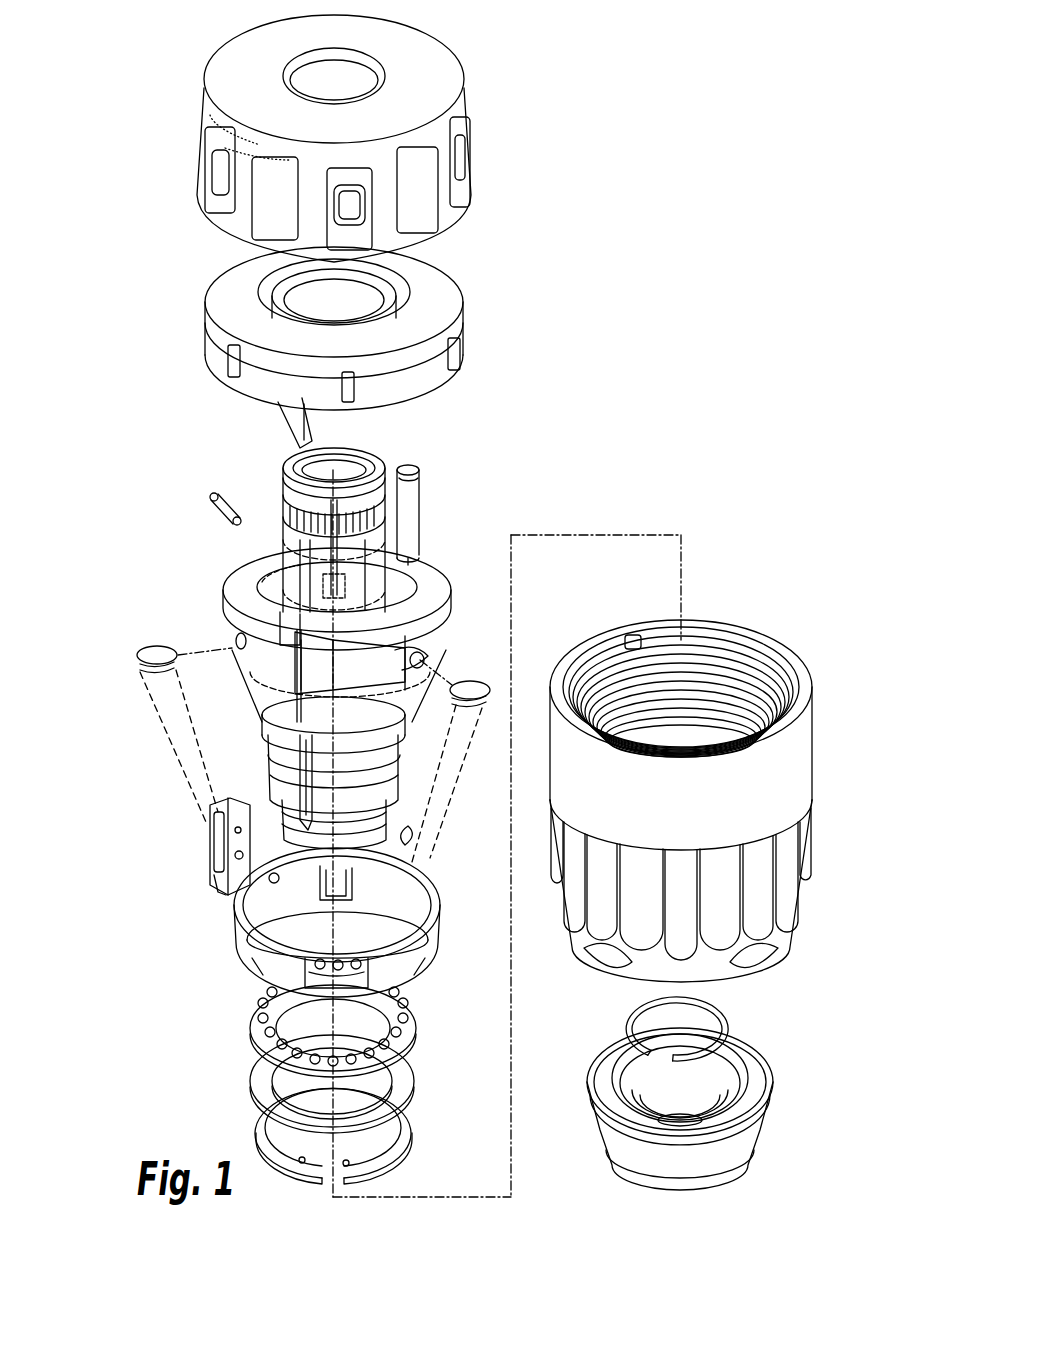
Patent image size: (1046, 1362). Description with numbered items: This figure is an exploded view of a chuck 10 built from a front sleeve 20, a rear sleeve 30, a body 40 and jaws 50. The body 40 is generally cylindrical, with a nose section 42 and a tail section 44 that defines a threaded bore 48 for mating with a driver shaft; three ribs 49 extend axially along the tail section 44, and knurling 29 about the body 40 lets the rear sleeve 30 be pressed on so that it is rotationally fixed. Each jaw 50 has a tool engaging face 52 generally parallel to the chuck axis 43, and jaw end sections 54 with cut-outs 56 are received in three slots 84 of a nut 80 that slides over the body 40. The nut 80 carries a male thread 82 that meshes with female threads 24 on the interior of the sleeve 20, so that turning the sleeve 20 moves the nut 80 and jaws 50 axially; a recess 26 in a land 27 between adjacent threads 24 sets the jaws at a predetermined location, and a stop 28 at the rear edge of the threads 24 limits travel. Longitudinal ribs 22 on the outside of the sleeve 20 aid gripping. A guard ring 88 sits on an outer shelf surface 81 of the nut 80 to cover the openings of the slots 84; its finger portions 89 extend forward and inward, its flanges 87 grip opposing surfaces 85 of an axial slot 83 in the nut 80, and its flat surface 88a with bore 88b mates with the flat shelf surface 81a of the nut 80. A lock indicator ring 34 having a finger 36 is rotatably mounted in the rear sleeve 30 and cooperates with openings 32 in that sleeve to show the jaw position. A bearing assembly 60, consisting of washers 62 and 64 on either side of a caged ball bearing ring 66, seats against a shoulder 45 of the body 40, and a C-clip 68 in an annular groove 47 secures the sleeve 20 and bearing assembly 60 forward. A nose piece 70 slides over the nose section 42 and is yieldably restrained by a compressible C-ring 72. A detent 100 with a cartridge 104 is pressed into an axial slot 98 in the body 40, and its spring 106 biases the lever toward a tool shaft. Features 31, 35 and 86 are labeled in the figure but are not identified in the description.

The chuck 10 is at (190, 462).
The front sleeve 20 is at (740, 810).
The longitudinal ribs 22 is at (656, 894).
The female threads 24 is at (740, 648).
The recess 26 is at (604, 700).
The land 27 is at (706, 675).
The stop 28 is at (633, 635).
The knurling 29 is at (290, 505).
The rear sleeve 30 is at (440, 83).
The opening 31 is at (262, 590).
The openings 32 is at (222, 170).
The lock indicator ring 34 is at (250, 288).
The ring tabs 35 is at (228, 358).
The finger 36 is at (280, 415).
The body 40 is at (375, 565).
The nose section 42 is at (405, 855).
The chuck axis 43 is at (335, 1196).
The tail section 44 is at (300, 478).
The shoulder 45 is at (295, 745).
The annular groove 47 is at (393, 790).
The threaded bore 48 is at (338, 470).
The ribs 49 is at (329, 540).
The jaws 50 is at (420, 525).
The tool engaging face 52 is at (212, 760).
The end sections 54 is at (410, 468).
The cut-outs 56 is at (418, 483).
The bearing assembly 60 is at (220, 1070).
The forward washer 62 is at (402, 1085).
The washer 64 is at (395, 938).
The caged ball bearing ring 66 is at (405, 1035).
The C-clip 68 is at (404, 1132).
The nose piece 70 is at (762, 1068).
The compressible C-ring 72 is at (722, 1010).
The nut 80 is at (440, 640).
The outer shelf surface 81 is at (364, 686).
The flat shelf surface 81a is at (262, 575).
The male thread 82 is at (232, 624).
The axial slot 83 is at (321, 686).
The slots 84 is at (360, 600).
The opposing surfaces 85 is at (360, 633).
The shoulder 86 is at (318, 700).
The flanges 87 is at (355, 955).
The guard ring 88 is at (352, 874).
The flat surface 88a is at (272, 882).
The bore 88b is at (248, 928).
The finger portions 89 is at (346, 888).
The axial slot 98 is at (330, 778).
The detent 100 is at (200, 845).
The cartridge 104 is at (250, 835).
The spring 106 is at (398, 664).